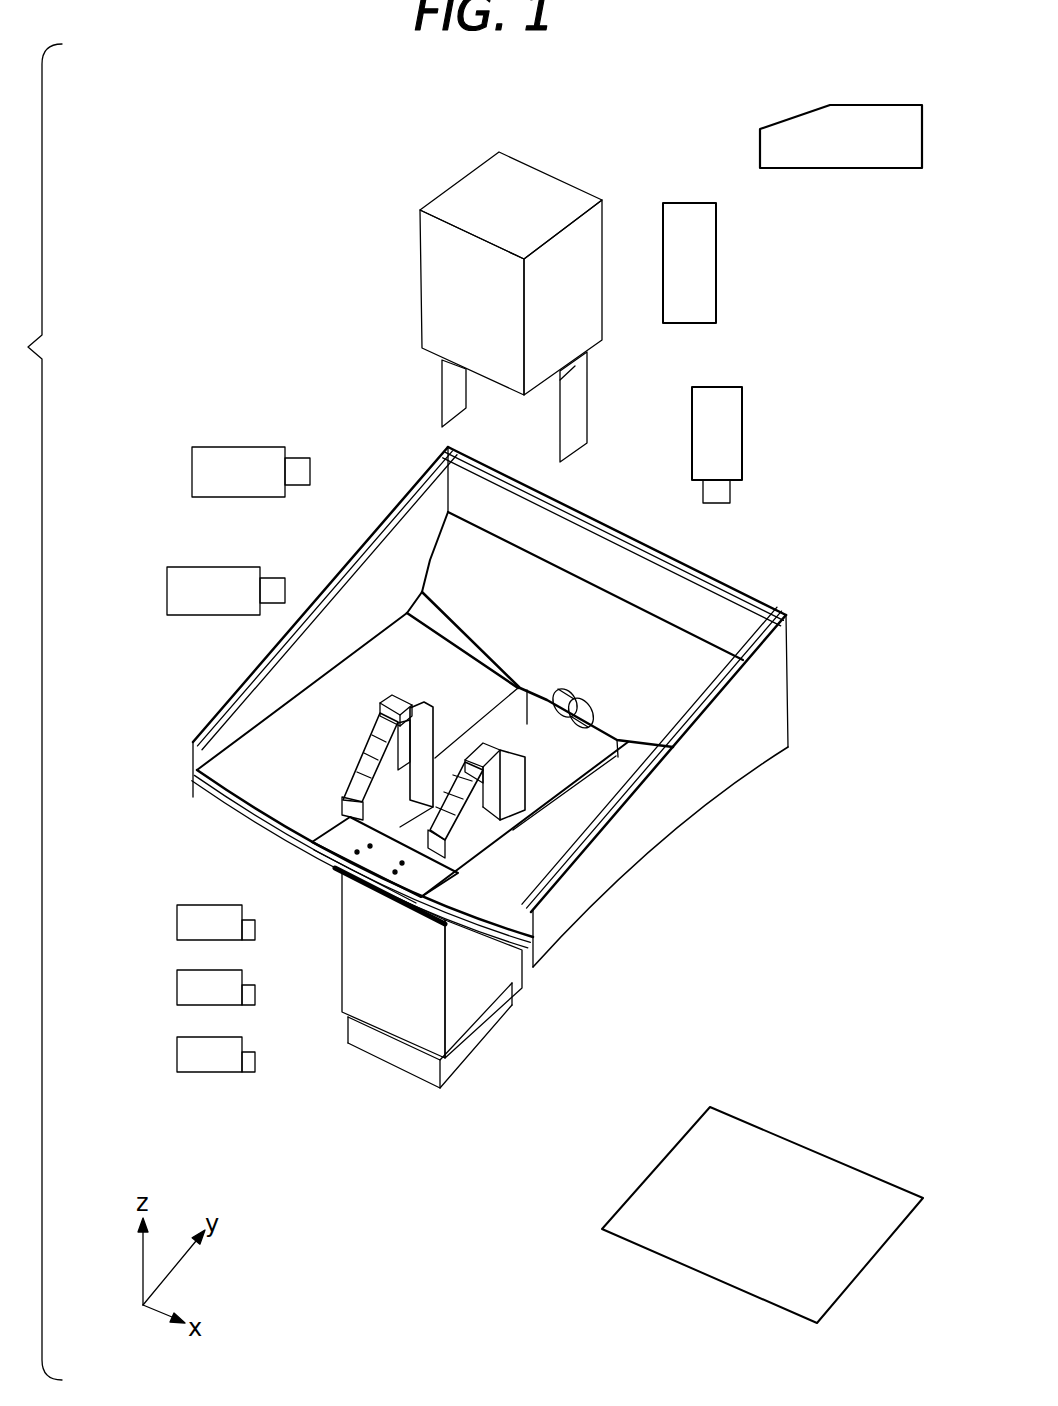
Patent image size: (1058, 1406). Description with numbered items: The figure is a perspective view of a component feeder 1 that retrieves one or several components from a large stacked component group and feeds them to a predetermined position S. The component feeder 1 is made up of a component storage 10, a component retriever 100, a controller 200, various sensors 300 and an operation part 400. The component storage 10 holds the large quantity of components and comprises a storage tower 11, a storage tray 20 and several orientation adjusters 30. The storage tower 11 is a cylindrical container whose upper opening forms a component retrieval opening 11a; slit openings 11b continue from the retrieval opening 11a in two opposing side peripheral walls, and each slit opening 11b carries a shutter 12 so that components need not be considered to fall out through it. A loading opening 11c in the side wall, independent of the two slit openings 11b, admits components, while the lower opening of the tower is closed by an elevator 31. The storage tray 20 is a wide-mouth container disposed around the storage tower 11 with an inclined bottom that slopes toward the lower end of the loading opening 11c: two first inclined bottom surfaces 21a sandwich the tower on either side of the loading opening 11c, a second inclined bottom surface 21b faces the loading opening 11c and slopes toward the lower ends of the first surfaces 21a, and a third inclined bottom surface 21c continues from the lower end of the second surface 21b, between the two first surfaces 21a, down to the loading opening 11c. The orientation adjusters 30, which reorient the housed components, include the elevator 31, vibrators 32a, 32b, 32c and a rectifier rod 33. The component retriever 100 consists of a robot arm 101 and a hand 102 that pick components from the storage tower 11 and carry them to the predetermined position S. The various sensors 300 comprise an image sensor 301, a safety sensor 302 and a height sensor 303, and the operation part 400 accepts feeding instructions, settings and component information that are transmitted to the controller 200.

The component feeder 1 is at (106, 92).
The component storage 10 is at (363, 502).
The storage tower 11 is at (429, 855).
The component retrieval opening 11a is at (393, 785).
The slit opening 11b is at (407, 732).
The loading opening 11c is at (442, 755).
The shutter 12 is at (385, 705).
The storage tray 20 is at (520, 707).
The first inclined bottom surface 21a is at (287, 737).
The second inclined bottom surface 21b is at (603, 610).
The third inclined bottom surface 21c is at (590, 746).
The orientation adjuster 30 is at (335, 878).
The elevator 31 is at (455, 1075).
The vibrator 32a is at (175, 922).
The vibrator 32b is at (175, 990).
The vibrator 32c is at (175, 1057).
The rectifier rod 33 is at (562, 688).
The component retriever 100 is at (509, 295).
The robot arm 101 is at (458, 182).
The hand 102 is at (440, 382).
The controller 200 is at (717, 262).
The various sensors 300 is at (518, 501).
The image sensor 301 is at (743, 430).
The safety sensor 302 is at (237, 445).
The height sensor 303 is at (212, 565).
The operation part 400 is at (797, 115).
The predetermined position S is at (657, 1165).